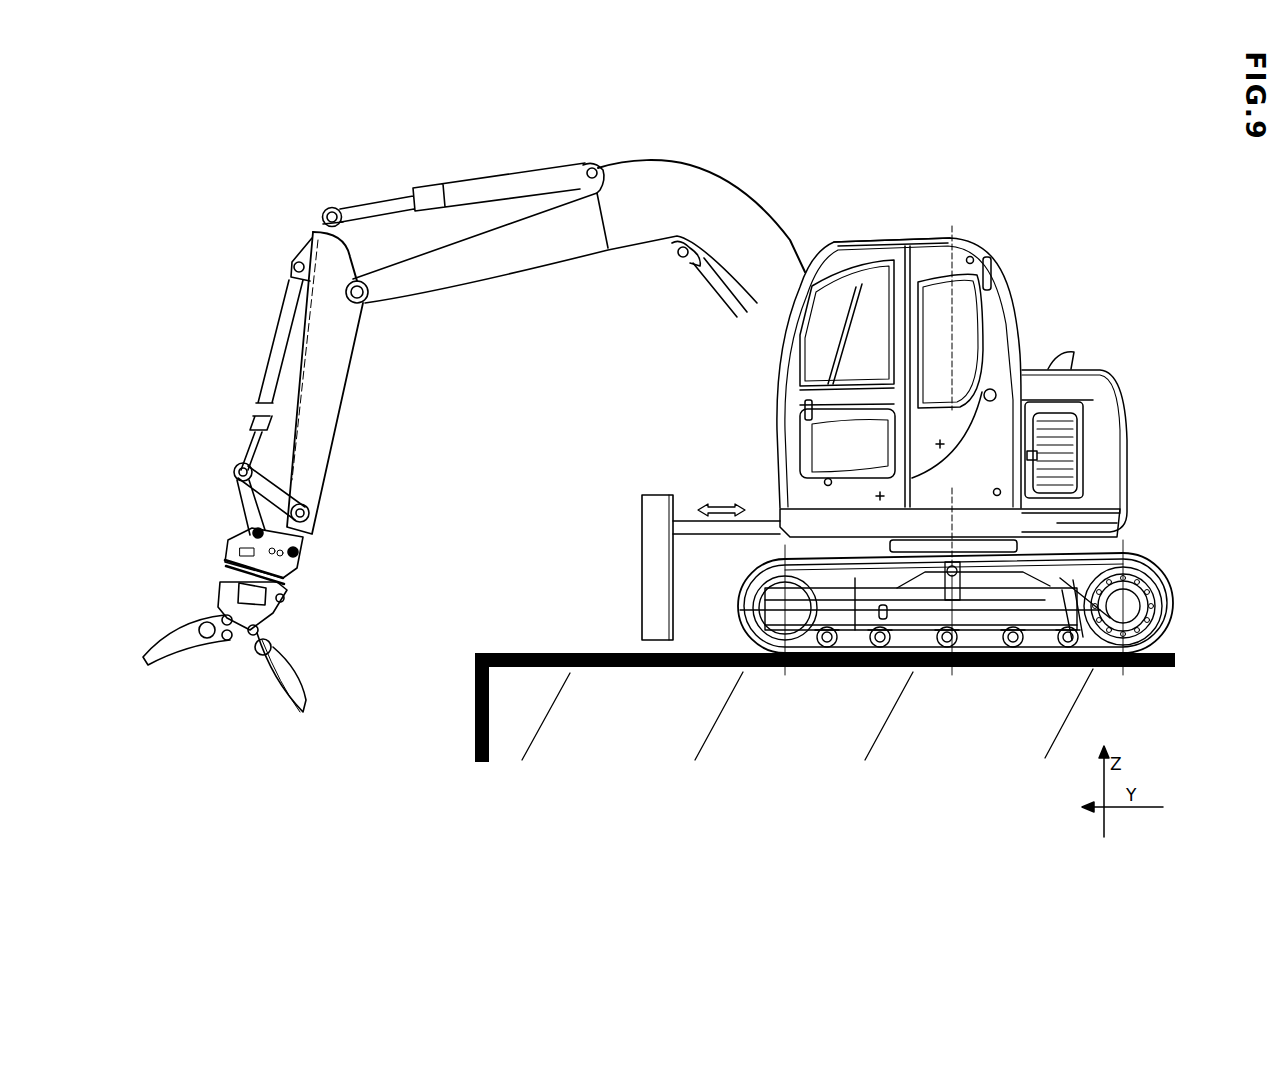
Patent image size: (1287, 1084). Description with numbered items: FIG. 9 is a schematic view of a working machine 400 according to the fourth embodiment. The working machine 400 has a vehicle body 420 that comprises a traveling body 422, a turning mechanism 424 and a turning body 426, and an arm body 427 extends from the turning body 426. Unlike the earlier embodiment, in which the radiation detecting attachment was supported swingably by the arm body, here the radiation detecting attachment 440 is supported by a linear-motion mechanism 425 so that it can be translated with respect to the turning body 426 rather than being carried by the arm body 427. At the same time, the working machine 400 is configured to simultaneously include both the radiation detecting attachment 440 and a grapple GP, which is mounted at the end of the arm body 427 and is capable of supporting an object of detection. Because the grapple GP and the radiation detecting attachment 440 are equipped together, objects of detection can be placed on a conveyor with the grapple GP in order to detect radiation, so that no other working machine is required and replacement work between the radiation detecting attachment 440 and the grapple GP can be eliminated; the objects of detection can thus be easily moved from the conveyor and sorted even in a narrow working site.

The working machine 400 is at (1010, 256).
The vehicle body 420 is at (1050, 347).
The traveling body 422 is at (1053, 618).
The turning mechanism 424 is at (935, 540).
The linear-motion mechanism 425 is at (718, 527).
The turning body 426 is at (1003, 418).
The arm body 427 is at (620, 148).
The radiation detecting attachment 440 is at (655, 557).
The grapple GP is at (316, 580).